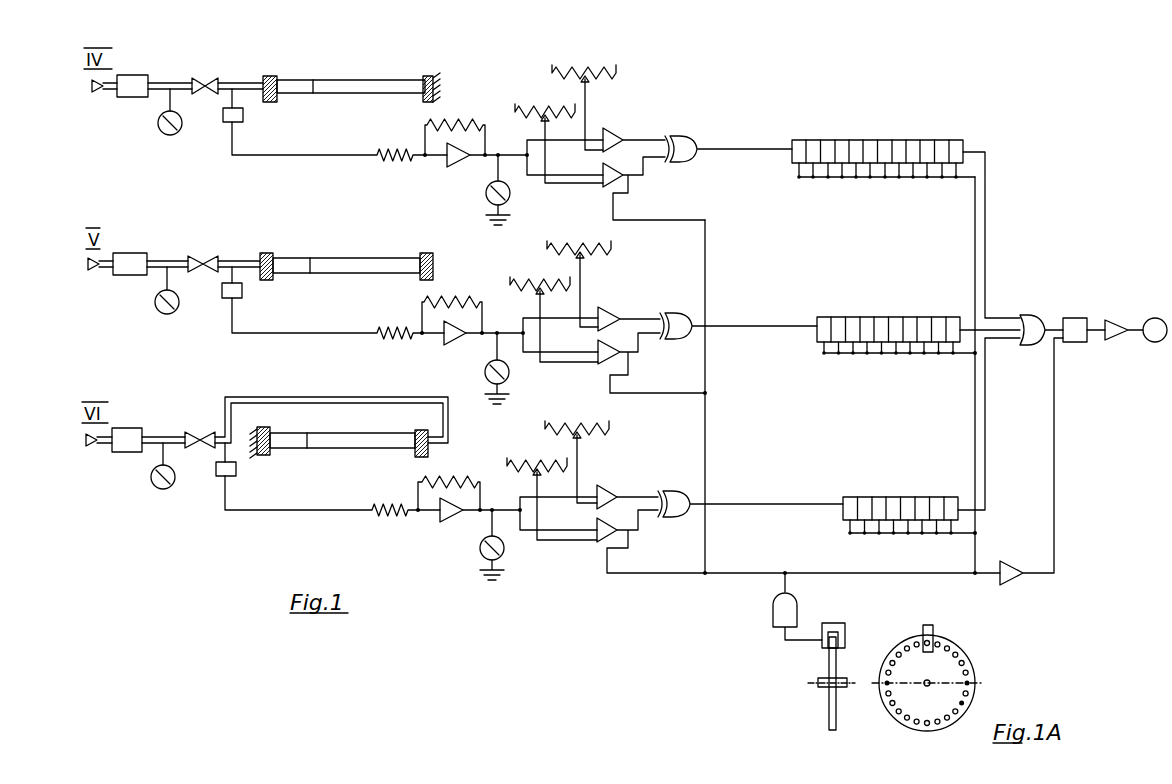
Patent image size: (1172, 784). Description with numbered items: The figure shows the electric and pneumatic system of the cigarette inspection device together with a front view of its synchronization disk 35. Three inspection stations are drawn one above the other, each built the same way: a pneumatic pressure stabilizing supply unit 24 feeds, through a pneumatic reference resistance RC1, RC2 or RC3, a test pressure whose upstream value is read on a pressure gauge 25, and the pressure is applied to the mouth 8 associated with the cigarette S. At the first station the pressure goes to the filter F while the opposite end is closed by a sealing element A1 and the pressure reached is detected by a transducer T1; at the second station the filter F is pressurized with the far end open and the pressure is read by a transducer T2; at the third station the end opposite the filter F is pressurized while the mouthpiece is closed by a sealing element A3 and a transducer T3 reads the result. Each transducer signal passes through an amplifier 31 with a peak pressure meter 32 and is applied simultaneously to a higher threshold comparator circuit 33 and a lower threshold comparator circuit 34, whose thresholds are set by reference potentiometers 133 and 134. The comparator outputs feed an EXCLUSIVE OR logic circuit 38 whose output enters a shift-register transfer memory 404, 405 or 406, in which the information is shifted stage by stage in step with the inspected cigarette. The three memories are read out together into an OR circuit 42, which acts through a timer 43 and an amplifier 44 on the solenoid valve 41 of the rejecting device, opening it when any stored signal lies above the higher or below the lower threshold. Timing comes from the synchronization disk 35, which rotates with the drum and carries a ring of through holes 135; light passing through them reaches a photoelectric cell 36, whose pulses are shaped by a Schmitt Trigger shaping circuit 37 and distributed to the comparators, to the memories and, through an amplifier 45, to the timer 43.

In FIG. 1, the pneumatic pressure stabilizing supply unit 24 is at (134, 96).
In FIG. 1, the pressure gauge 25 is at (158, 130).
In FIG. 1, the pneumatic reference resistance RC1 is at (205, 78).
In FIG. 1, the pneumatic reference resistance RC2 is at (208, 249).
In FIG. 1, the pneumatic reference resistance RC3 is at (200, 432).
In FIG. 1, the pressure transducer T1 is at (224, 124).
In FIG. 1, the pressure transducer T2 is at (221, 300).
In FIG. 1, the pressure transducer T3 is at (215, 477).
In FIG. 1, the mouth 8 is at (270, 103).
In FIG. 1, the filter F is at (310, 94).
In FIG. 1, the cigarette S is at (350, 94).
In FIG. 1, the sealing element A1 is at (437, 86).
In FIG. 1, the sealing element A3 is at (258, 458).
In FIG. 1, the amplifier 31 is at (450, 165).
In FIG. 1, the peak pressure meter 32 is at (485, 199).
In FIG. 1, the comparator circuit 33 is at (615, 134).
In FIG. 1, the comparator circuit 34 is at (606, 186).
In FIG. 1, the EXCLUSIVE OR logic circuit 38 is at (683, 136).
In FIG. 1, the reference potentiometer 133 is at (616, 76).
In FIG. 1, the reference potentiometer 134 is at (534, 104).
In FIG. 1, the transfer memory 404 is at (900, 140).
In FIG. 1, the transfer memory 405 is at (900, 317).
In FIG. 1, the transfer memory 406 is at (912, 490).
In FIG. 1, the OR circuit 42 is at (1032, 315).
In FIG. 1, the timer 43 is at (1078, 343).
In FIG. 1, the output amplifier 44 is at (1122, 312).
In FIG. 1, the solenoid valve 41 is at (1150, 342).
In FIG. 1, the amplifier 45 is at (1022, 559).
In FIG. 1, the Schmitt Trigger shaping circuit 37 is at (772, 615).
In FIG. 1, the photoelectric cell 36 is at (820, 645).
In FIG. 1A, the photoelectric cell 36 is at (934, 630).
In FIG. 1, the synchronization disk 35 is at (829, 706).
In FIG. 1A, the synchronization disk 35 is at (963, 668).
In FIG. 1A, the through holes 135 is at (968, 702).